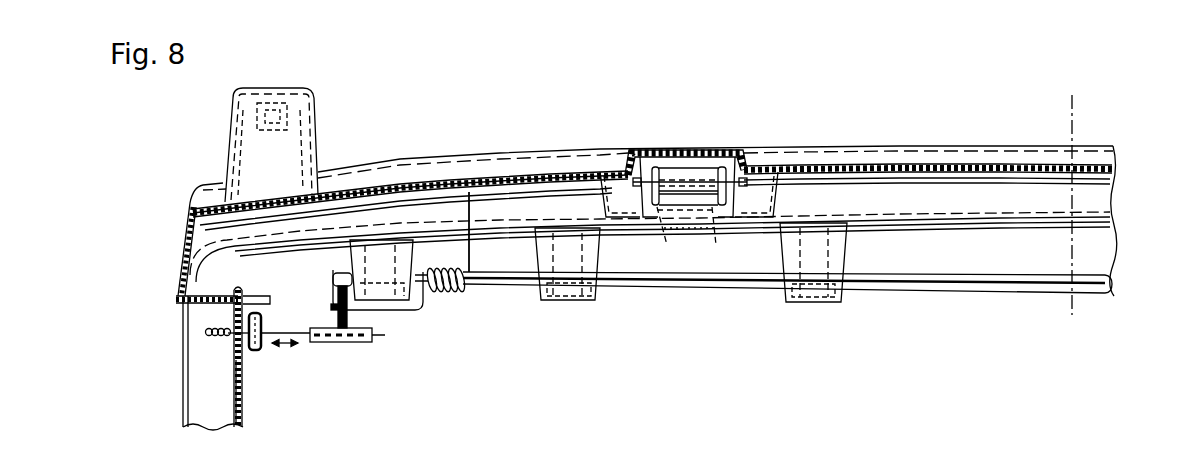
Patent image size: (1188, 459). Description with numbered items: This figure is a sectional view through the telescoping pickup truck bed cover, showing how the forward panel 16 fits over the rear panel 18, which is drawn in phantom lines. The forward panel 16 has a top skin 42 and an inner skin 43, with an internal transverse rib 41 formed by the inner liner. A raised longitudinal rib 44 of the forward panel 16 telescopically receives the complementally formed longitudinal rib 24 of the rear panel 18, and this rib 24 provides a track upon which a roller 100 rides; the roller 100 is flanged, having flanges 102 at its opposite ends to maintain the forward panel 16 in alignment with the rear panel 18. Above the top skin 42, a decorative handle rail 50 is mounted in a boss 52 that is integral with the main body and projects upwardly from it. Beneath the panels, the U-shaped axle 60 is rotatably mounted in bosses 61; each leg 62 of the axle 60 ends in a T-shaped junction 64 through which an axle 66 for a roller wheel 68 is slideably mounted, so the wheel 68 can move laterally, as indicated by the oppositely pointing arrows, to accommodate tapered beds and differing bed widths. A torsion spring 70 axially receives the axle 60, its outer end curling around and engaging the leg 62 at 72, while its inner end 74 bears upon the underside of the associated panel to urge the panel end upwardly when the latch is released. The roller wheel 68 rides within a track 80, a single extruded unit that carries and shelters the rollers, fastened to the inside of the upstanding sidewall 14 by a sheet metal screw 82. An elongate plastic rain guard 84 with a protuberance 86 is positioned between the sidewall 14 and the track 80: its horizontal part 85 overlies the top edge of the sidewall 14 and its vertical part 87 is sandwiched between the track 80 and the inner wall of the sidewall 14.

The sidewall 14 is at (178, 396).
The forward panel 16 is at (870, 160).
The rearward panel 18 is at (667, 228).
The raised rib 24 is at (710, 228).
The internal transverse rib 41 is at (1013, 213).
The top skin 42 is at (573, 173).
The inner skin 43 is at (582, 182).
The raised longitudinal rib 44 is at (707, 150).
The handle rail 50 is at (318, 100).
The boss 52 is at (287, 107).
The U-shaped axle 60 is at (1023, 294).
The boss 61 is at (383, 297).
The leg 62 is at (336, 297).
The T-shaped junction 64 is at (343, 343).
The axle 66 is at (300, 340).
The roller wheel 68 is at (265, 352).
The torsion spring 70 is at (443, 292).
The outer end engagement 72 is at (331, 307).
The inner end 74 is at (465, 212).
The track 80 is at (256, 352).
The sheet metal screw 82 is at (205, 331).
The rain guard 84 is at (177, 308).
The horizontal part 85 is at (205, 292).
The protuberance 86 is at (242, 290).
The vertical part 87 is at (241, 367).
The roller 100 is at (700, 148).
The flange 102 is at (667, 150).